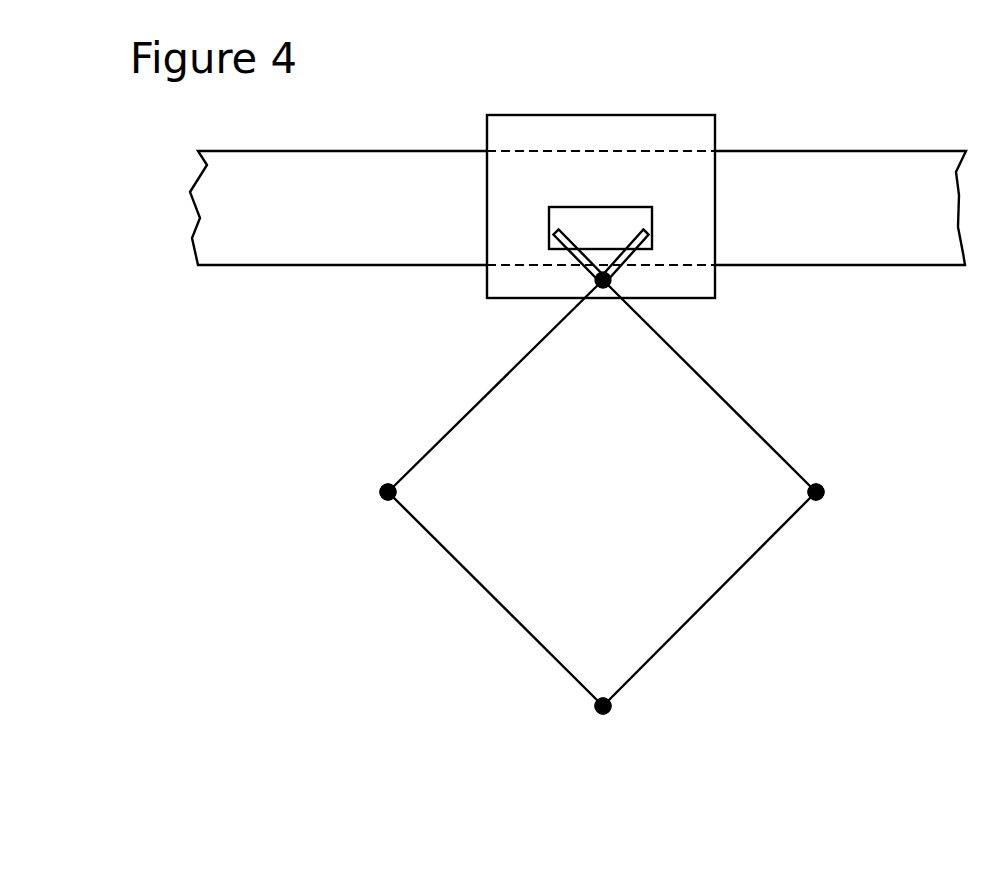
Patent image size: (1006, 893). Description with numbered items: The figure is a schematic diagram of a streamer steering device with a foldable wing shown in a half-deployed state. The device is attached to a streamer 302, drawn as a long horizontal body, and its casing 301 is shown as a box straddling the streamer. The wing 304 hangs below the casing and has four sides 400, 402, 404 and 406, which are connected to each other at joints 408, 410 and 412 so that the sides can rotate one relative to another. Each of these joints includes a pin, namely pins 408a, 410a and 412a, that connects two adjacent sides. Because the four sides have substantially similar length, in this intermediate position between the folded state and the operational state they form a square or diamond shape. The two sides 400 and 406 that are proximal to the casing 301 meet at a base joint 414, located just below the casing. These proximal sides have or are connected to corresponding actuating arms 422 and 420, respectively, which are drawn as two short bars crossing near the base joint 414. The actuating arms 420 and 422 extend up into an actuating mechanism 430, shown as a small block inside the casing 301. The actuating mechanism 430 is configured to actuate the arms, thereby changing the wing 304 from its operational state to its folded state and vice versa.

The casing 301 is at (698, 299).
The streamer 302 is at (897, 264).
The wing 304 is at (625, 511).
The side 400 is at (477, 401).
The side 402 is at (495, 600).
The side 404 is at (708, 600).
The side 406 is at (720, 394).
The joint 408 is at (372, 487).
The pin 408a is at (388, 502).
The joint 410 is at (603, 730).
The pin 410a is at (593, 704).
The joint 412 is at (835, 489).
The pin 412a is at (818, 485).
The base joint 414 is at (580, 281).
The actuating arm 420 is at (573, 255).
The actuating arm 422 is at (627, 255).
The actuating mechanism 430 is at (652, 213).